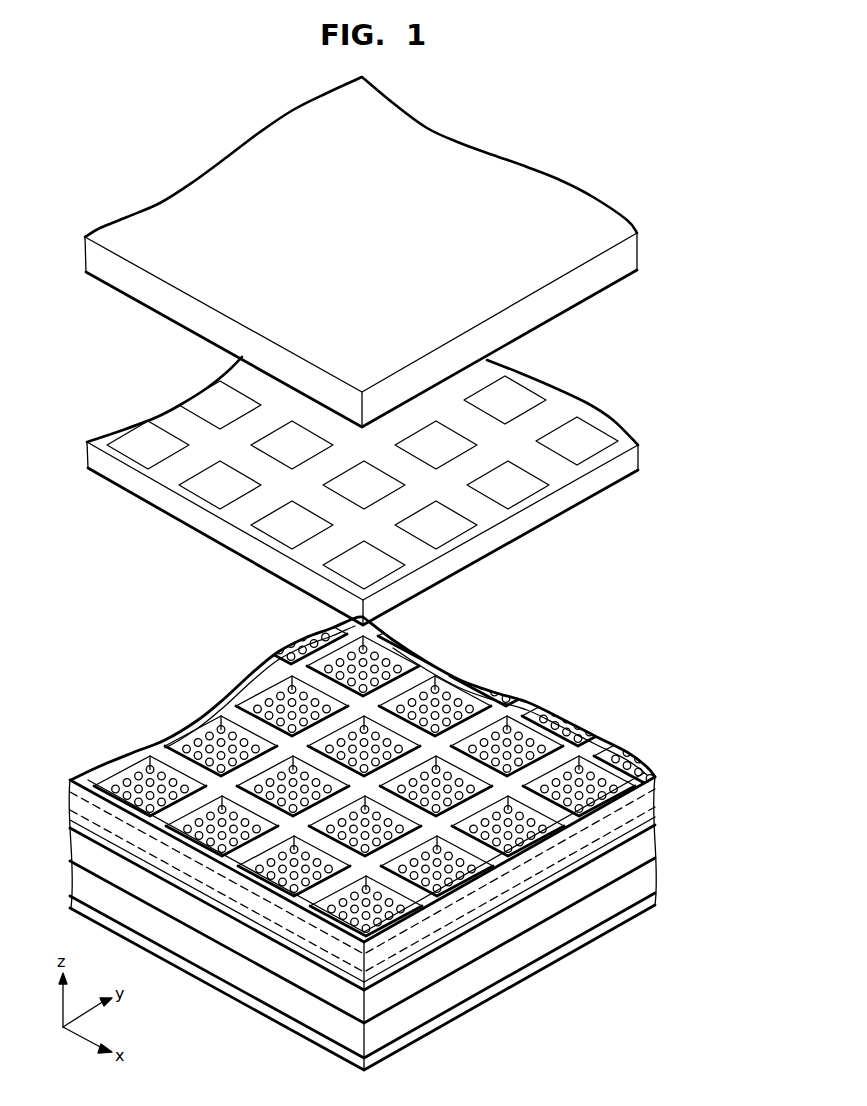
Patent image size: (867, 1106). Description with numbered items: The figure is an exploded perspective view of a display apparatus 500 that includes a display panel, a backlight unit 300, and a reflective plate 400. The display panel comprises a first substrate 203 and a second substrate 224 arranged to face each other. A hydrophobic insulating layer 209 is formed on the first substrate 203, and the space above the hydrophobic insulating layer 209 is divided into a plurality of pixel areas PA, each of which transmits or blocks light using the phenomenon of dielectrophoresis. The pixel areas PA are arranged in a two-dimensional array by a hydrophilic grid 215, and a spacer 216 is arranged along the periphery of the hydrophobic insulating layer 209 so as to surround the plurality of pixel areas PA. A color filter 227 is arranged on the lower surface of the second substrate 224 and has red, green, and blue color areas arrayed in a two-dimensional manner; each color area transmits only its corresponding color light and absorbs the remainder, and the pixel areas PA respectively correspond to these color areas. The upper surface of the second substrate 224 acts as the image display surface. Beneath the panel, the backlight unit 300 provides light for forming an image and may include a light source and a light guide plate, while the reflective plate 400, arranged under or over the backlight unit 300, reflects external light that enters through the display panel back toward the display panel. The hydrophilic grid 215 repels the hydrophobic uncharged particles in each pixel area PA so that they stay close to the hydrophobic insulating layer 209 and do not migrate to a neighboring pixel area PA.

The display apparatus 500 is at (553, 132).
The second substrate 224 is at (557, 308).
The color filter 227 is at (557, 503).
The hydrophilic grid 215 is at (550, 760).
The pixel area PA is at (590, 767).
The spacer 216 is at (643, 772).
The hydrophobic insulating layer 209 is at (654, 820).
The first substrate 203 is at (652, 847).
The backlight unit 300 is at (652, 880).
The reflective plate 400 is at (653, 900).